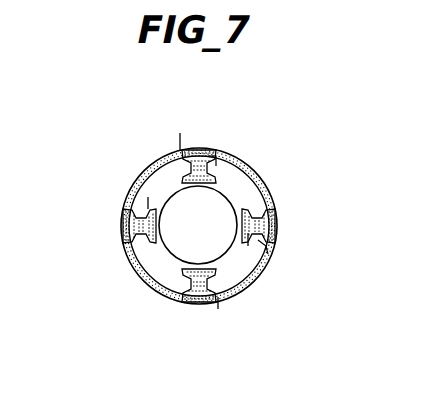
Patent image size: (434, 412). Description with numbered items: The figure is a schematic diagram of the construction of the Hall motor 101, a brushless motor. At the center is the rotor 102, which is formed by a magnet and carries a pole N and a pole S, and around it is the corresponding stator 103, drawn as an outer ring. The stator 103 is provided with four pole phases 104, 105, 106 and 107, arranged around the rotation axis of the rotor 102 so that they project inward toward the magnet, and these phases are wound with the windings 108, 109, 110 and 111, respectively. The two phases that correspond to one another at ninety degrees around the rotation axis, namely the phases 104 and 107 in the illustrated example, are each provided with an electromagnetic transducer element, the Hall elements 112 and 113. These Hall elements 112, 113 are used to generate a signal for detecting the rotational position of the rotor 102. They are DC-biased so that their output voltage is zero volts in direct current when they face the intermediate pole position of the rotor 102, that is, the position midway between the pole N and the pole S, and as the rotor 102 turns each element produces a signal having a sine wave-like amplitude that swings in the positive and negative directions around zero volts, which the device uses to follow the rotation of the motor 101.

The Hall motor 101 is at (193, 189).
The rotor 102 is at (153, 218).
The stator 103 is at (234, 226).
The phase 104 is at (216, 134).
The phase 105 is at (123, 263).
The phase 106 is at (208, 316).
The phase 107 is at (306, 241).
The winding 108 is at (139, 137).
The winding 109 is at (100, 237).
The winding 110 is at (256, 325).
The winding 111 is at (307, 224).
The Hall element 112 is at (259, 141).
The Hall element 113 is at (304, 275).